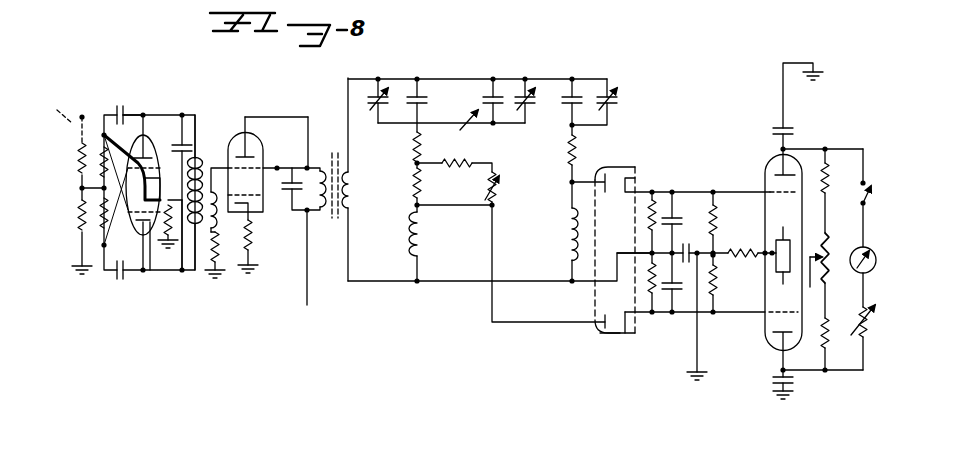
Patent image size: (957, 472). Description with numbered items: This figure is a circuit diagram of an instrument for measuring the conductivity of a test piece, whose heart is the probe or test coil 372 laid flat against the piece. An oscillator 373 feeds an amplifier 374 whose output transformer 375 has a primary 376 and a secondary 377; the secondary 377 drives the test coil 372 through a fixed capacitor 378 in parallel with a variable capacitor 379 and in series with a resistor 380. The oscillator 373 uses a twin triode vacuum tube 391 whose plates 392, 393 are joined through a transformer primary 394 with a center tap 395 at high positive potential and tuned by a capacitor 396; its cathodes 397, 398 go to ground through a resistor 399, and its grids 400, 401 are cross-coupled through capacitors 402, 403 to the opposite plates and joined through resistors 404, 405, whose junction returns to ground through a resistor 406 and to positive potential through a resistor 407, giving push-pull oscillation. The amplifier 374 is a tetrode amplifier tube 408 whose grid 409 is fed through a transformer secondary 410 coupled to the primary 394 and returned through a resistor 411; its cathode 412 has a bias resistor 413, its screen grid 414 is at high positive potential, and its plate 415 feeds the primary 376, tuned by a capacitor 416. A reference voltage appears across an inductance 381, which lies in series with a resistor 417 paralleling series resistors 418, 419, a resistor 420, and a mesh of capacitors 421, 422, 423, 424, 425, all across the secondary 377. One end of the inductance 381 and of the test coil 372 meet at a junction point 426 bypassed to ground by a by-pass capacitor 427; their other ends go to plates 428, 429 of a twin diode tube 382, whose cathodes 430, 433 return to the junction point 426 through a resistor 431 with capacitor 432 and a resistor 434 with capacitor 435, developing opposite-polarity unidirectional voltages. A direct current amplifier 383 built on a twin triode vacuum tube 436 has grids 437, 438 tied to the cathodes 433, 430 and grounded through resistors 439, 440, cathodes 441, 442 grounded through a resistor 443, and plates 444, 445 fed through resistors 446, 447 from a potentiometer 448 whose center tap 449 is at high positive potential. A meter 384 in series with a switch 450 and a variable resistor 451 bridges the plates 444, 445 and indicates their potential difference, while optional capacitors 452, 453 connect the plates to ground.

The test coil 372 is at (568, 234).
The oscillator 373 is at (122, 96).
The amplifier 374 is at (262, 90).
The output transformer 375 is at (327, 150).
The primary 376 is at (313, 212).
The secondary 377 is at (352, 176).
The fixed capacitor 378 is at (570, 96).
The variable capacitor 379 is at (609, 98).
The resistor 380 is at (577, 152).
The inductance 381 is at (420, 236).
The twin diode tube 382 is at (636, 338).
The direct current amplifier 383 is at (806, 145).
The meter 384 is at (856, 248).
The twin triode vacuum tube 391 is at (147, 114).
The plate 392 is at (152, 175).
The plate 393 is at (150, 273).
The transformer primary 394 is at (198, 160).
The center tap 395 is at (216, 205).
The capacitor 396 is at (195, 152).
The cathode 397 is at (155, 169).
The cathode 398 is at (116, 135).
The resistor 399 is at (182, 275).
The grid 400 is at (176, 153).
The grid 401 is at (117, 246).
The capacitor 402 is at (120, 278).
The capacitor 403 is at (127, 109).
The resistor 404 is at (100, 242).
The resistor 405 is at (101, 150).
The resistor 406 is at (78, 215).
The resistor 407 is at (78, 158).
The tetrode amplifier tube 408 is at (266, 157).
The grid 409 is at (258, 198).
The transformer secondary 410 is at (197, 262).
The resistor 411 is at (220, 256).
The cathode 412 is at (251, 227).
The bias resistor 413 is at (251, 258).
The screen grid 414 is at (216, 171).
The plate 415 is at (254, 156).
The capacitor 416 is at (307, 165).
The resistor 417 is at (412, 177).
The resistor 418 is at (462, 167).
The resistor 419 is at (495, 180).
The resistor 420 is at (421, 146).
The capacitor 421 is at (380, 92).
The capacitor 422 is at (419, 92).
The capacitor 423 is at (494, 92).
The capacitor 424 is at (527, 92).
The capacitor 425 is at (466, 118).
The junction point 426 is at (648, 252).
The by-pass capacitor 427 is at (688, 247).
The plate 428 is at (596, 322).
The plate 429 is at (604, 170).
The cathode 430 is at (610, 334).
The resistor 431 is at (652, 314).
The capacitor 432 is at (674, 316).
The cathode 433 is at (638, 180).
The resistor 434 is at (655, 200).
The capacitor 435 is at (676, 212).
The twin triode vacuum tube 436 is at (772, 163).
The grid 437 is at (768, 196).
The grid 438 is at (750, 313).
The resistor 439 is at (717, 222).
The resistor 440 is at (714, 312).
The cathode 441 is at (784, 237).
The cathode 442 is at (781, 277).
The resistor 443 is at (748, 258).
The plate 444 is at (780, 173).
The plate 445 is at (780, 345).
The resistor 446 is at (826, 164).
The resistor 447 is at (827, 328).
The potentiometer 448 is at (846, 196).
The center tap 449 is at (812, 272).
The switch 450 is at (868, 200).
The variable resistor 451 is at (866, 318).
The capacitor 452 is at (776, 127).
The capacitor 453 is at (772, 387).